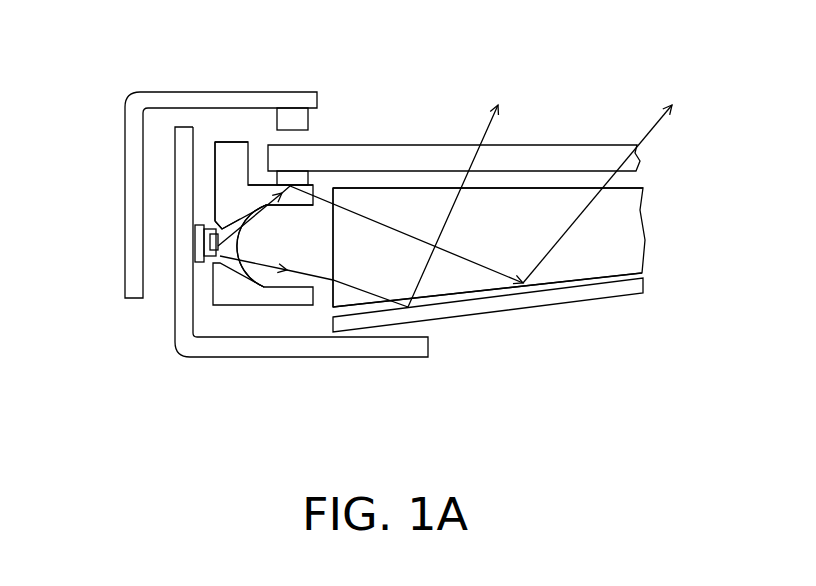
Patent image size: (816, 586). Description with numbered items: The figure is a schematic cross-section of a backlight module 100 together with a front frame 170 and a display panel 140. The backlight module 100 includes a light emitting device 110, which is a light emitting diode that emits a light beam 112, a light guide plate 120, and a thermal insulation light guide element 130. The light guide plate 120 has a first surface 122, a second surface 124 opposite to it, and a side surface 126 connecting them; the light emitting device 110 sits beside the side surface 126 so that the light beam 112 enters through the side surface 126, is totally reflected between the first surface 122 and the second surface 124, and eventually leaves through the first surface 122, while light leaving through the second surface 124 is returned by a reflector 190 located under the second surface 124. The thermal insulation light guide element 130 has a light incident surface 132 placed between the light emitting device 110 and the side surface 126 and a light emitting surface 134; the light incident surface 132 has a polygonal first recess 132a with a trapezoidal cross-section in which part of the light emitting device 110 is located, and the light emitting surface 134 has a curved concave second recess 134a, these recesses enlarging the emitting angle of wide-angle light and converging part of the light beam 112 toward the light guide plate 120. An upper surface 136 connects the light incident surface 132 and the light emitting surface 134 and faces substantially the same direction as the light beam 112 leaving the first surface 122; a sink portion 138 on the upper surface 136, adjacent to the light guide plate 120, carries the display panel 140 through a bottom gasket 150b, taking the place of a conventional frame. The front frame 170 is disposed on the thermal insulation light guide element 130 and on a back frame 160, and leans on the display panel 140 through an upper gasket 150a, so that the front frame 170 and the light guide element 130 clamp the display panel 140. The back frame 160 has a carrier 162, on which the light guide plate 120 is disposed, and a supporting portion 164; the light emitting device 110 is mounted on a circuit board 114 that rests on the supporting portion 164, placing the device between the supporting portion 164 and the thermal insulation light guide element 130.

The backlight module 100 is at (728, 411).
The light emitting device 110 is at (213, 262).
The light beam 112 is at (482, 268).
The circuit board 114 is at (197, 233).
The light guide plate 120 is at (523, 283).
The first surface 122 is at (638, 187).
The second surface 124 is at (632, 279).
The side surface 126 is at (324, 258).
The thermal insulation light guide element 130 is at (226, 228).
The light incident surface 132 is at (211, 178).
The first recess 132a is at (222, 229).
The light emitting surface 134 is at (273, 209).
The second recess 134a is at (250, 264).
The upper surface 136 is at (231, 138).
The sink portion 138 is at (258, 178).
The display panel 140 is at (527, 150).
The upper gasket 150a is at (302, 122).
The bottom gasket 150b is at (295, 178).
The back frame 160 is at (220, 272).
The carrier 162 is at (200, 350).
The supporting portion 164 is at (178, 314).
The front frame 170 is at (133, 115).
The reflector 190 is at (542, 304).